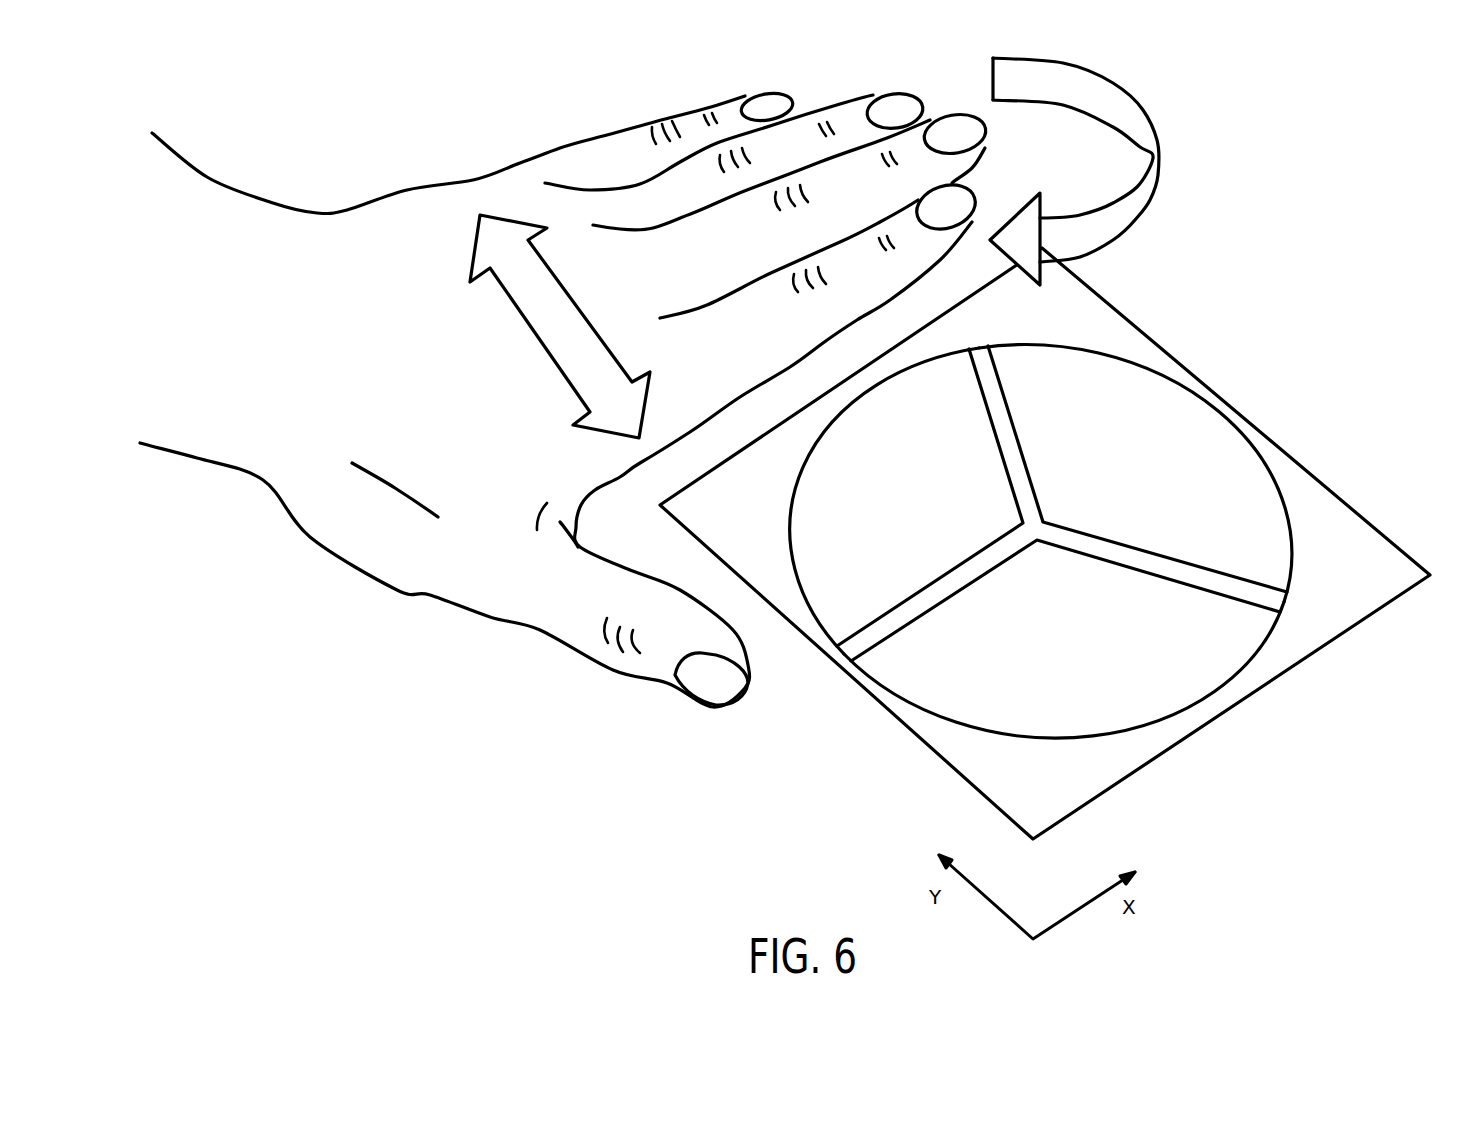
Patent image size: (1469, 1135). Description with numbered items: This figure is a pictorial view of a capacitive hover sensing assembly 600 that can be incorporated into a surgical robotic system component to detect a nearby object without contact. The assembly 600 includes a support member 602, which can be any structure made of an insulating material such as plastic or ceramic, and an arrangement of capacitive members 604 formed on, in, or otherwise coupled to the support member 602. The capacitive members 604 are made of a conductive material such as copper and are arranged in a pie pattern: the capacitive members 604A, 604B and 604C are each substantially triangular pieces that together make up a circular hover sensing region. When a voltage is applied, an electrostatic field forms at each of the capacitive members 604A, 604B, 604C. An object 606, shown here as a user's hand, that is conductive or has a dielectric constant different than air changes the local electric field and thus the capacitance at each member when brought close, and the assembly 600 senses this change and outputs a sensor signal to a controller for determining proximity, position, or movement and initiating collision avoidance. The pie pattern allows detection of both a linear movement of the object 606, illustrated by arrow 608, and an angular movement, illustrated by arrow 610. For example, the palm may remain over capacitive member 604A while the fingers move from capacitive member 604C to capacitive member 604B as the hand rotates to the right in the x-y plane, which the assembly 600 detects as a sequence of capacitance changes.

The capacitive hover sensing assembly 600 is at (1045, 543).
The support member 602 is at (1350, 503).
The capacitive members 604 is at (1122, 500).
The capacitive member 604A is at (1096, 650).
The capacitive member 604B is at (1173, 476).
The capacitive member 604C is at (939, 505).
The object 606 is at (377, 538).
The arrow 608 is at (542, 347).
The arrow 610 is at (1145, 107).